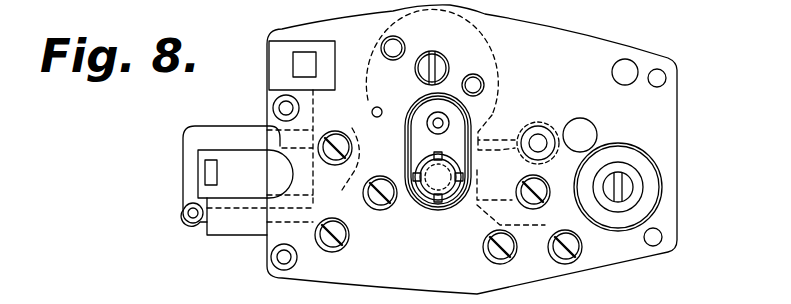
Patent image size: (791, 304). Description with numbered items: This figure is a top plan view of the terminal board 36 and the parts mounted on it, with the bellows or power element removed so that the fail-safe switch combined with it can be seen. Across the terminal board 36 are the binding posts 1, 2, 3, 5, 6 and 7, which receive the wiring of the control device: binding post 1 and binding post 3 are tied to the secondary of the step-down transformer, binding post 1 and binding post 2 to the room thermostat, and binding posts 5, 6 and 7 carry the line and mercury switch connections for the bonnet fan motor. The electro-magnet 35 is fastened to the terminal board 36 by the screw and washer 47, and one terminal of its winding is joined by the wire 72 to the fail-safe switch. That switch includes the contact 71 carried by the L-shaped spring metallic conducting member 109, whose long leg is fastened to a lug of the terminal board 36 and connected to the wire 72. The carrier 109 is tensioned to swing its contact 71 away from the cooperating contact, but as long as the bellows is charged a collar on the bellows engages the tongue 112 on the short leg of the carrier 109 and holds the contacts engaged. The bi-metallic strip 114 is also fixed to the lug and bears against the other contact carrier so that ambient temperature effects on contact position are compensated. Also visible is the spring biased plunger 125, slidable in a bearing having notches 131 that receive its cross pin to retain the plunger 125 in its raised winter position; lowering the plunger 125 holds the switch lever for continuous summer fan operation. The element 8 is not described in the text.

The binding post 1 is at (536, 185).
The binding post 2 is at (569, 252).
The binding post 3 is at (504, 252).
The binding post 5 is at (386, 197).
The binding post 6 is at (336, 242).
The binding post 7 is at (340, 142).
The window 8 is at (309, 65).
The electro-magnet 35 is at (395, 8).
The terminal board 36 is at (544, 276).
The screw and washer 47 is at (448, 66).
The contact 71 is at (183, 214).
The wire 72 is at (354, 127).
The L-shaped spring metallic conducting member 109 is at (220, 138).
The tongue 112 is at (216, 175).
The bi-metallic strip 114 is at (222, 234).
The spring biased plunger 125 is at (424, 203).
The notches 131 is at (463, 153).